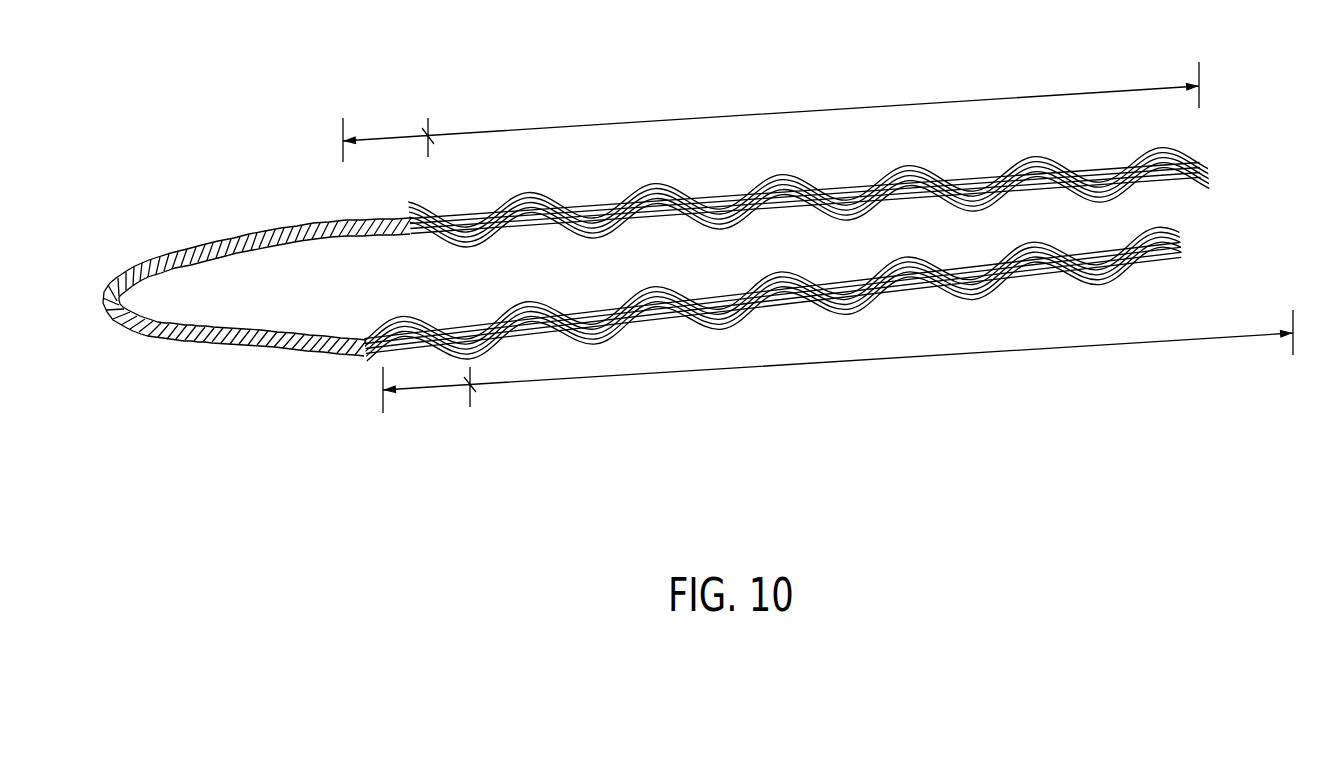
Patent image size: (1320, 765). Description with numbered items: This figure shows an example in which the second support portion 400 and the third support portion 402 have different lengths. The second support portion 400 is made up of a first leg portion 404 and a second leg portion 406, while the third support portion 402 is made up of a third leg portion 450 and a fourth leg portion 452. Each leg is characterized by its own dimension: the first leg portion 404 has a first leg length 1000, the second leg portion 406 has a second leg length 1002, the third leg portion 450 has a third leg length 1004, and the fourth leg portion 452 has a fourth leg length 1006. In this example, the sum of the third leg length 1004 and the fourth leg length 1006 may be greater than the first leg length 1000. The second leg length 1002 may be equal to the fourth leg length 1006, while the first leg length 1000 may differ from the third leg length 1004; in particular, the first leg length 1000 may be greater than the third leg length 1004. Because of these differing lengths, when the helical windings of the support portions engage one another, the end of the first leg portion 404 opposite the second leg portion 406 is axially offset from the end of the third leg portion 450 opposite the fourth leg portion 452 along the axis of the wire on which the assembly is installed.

The second support portion 400 is at (680, 398).
The third support portion 402 is at (605, 80).
The first leg portion 404 is at (972, 293).
The second leg portion 406 is at (447, 322).
The third leg portion 450 is at (907, 163).
The fourth leg portion 452 is at (403, 220).
The first leg length 1000 is at (860, 360).
The second leg length 1002 is at (418, 390).
The third leg length 1004 is at (805, 110).
The fourth leg length 1006 is at (388, 137).